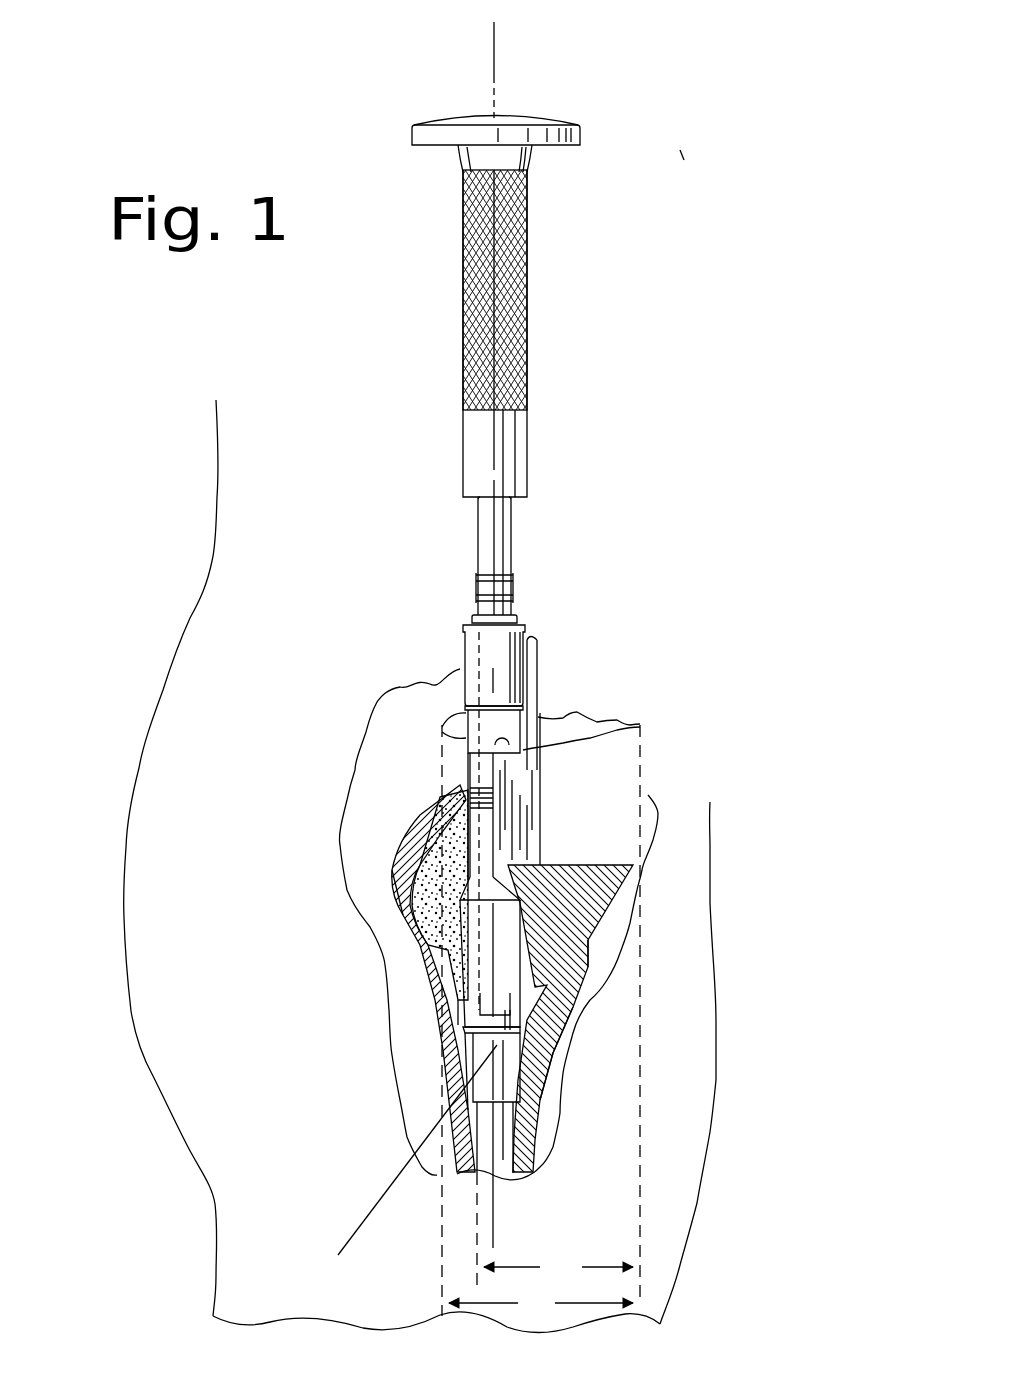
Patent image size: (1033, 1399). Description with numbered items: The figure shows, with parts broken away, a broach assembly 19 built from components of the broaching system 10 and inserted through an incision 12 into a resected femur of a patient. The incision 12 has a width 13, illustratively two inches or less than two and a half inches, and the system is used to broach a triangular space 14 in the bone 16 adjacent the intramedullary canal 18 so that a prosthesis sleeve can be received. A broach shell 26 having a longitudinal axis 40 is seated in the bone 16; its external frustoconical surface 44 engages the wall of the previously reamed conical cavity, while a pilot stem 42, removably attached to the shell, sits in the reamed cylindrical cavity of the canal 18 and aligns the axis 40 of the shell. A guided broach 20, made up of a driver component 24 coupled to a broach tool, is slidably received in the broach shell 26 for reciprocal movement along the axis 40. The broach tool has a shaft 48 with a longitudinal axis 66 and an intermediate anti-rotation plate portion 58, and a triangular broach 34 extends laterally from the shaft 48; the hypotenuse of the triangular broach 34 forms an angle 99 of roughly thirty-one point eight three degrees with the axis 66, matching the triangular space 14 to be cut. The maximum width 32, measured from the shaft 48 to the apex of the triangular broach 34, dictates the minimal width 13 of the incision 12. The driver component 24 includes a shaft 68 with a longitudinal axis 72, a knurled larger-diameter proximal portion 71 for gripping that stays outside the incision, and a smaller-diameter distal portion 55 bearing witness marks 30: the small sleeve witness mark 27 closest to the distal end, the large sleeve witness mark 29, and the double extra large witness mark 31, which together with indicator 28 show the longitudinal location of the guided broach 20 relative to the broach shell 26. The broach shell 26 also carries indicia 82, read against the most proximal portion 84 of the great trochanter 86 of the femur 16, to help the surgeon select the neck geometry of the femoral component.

The broaching system 10 is at (680, 155).
The incision 12 is at (578, 722).
The width 13 is at (541, 1303).
The triangular space 14 is at (578, 975).
The bone 16 is at (550, 1020).
The intramedullary canal 18 is at (528, 1130).
The broach assembly 19 is at (600, 595).
The guided broach 20 is at (545, 330).
The driver component 24 is at (462, 340).
The broach shell 26 is at (418, 915).
The small sleeve witness mark 27 is at (518, 625).
The indicator 28 is at (465, 628).
The large sleeve witness mark 29 is at (512, 598).
The witness marks 30 is at (478, 602).
The double extra large witness mark 31 is at (505, 575).
The maximum width 32 is at (558, 1267).
The triangular broach 34 is at (625, 869).
The longitudinal axis 40 is at (496, 1225).
The pilot stem 42 is at (468, 1120).
The external frustoconical surface 44 is at (460, 1038).
The shaft 48 is at (440, 972).
The distal portion 55 is at (510, 522).
The intermediate anti-rotation plate portion 58 is at (540, 826).
The longitudinal axis 66 is at (492, 35).
The shaft 68 is at (510, 308).
The proximal portion 71 is at (527, 230).
The longitudinal axis 72 is at (494, 74).
The indicia 82 is at (495, 806).
The most proximal portion 84 is at (445, 785).
The great trochanter 86 is at (388, 880).
The angle 99 is at (470, 1208).